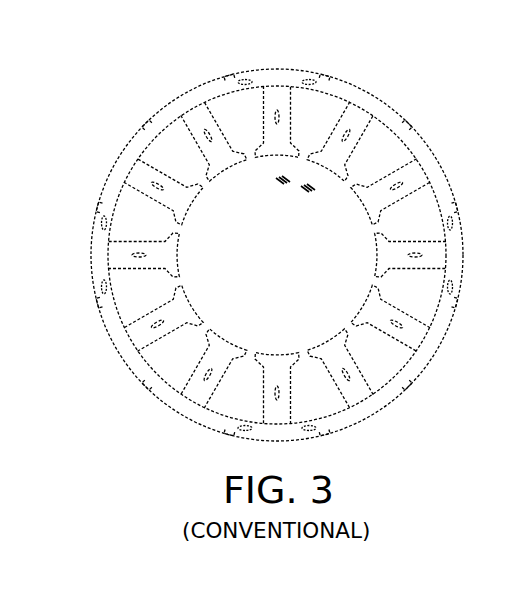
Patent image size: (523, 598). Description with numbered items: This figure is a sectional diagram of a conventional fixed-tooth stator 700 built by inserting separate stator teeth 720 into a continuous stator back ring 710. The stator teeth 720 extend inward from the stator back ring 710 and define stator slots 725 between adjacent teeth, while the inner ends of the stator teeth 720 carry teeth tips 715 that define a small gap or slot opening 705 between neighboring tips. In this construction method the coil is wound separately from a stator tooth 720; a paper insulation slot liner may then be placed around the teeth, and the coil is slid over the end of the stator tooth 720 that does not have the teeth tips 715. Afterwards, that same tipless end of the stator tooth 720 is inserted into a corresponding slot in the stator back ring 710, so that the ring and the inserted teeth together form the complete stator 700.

The fixed-tooth stator 700 is at (167, 79).
The slot opening 705 is at (298, 170).
The stator back ring 710 is at (100, 199).
The teeth tips 715 is at (378, 209).
The stator teeth 720 is at (95, 262).
The stator slots 725 is at (409, 376).